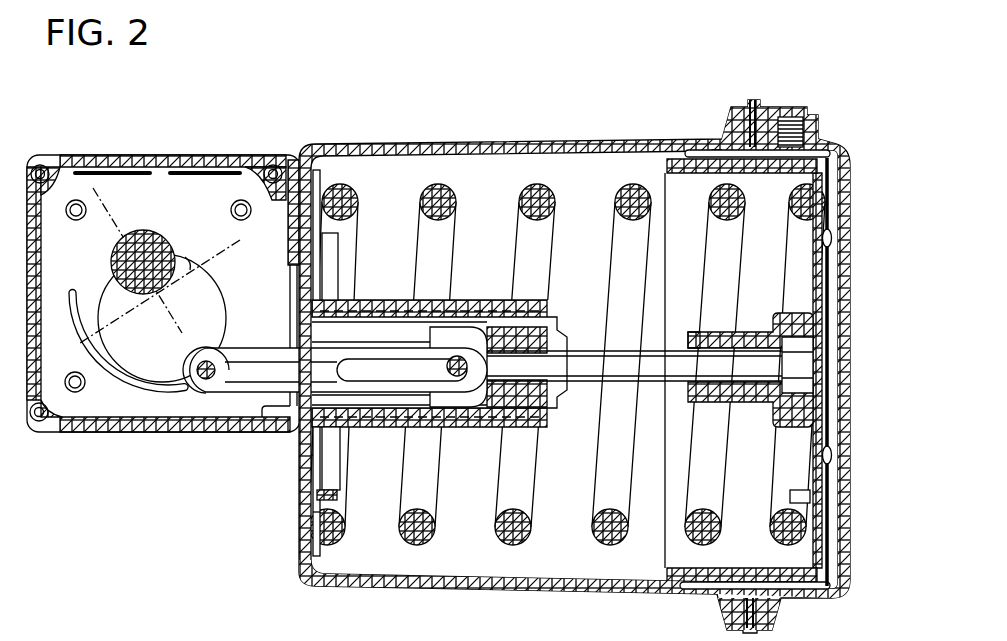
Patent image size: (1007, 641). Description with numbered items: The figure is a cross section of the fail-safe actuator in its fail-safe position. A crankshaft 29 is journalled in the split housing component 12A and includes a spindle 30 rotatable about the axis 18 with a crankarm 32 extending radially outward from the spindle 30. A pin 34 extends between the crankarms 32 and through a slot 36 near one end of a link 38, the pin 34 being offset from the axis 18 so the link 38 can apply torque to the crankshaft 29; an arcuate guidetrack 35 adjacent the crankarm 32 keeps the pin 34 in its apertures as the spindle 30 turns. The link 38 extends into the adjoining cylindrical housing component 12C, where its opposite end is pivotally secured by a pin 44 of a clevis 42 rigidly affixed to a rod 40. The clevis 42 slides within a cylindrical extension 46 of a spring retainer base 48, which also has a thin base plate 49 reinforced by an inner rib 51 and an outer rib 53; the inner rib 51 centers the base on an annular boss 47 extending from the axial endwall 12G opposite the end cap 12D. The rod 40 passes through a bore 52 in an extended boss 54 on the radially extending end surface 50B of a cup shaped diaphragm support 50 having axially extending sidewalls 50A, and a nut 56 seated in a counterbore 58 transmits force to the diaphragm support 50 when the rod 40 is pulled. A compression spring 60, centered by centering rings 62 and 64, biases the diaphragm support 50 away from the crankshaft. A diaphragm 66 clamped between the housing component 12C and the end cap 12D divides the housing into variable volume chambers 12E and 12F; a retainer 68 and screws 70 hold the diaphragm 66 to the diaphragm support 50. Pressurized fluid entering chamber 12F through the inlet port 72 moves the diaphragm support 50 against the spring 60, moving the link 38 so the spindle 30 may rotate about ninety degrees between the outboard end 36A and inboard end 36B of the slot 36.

The split housing component 12A is at (185, 156).
The adjoining housing component 12C is at (408, 145).
The end cap 12D is at (830, 142).
The variable volume chamber 12E is at (570, 575).
The variable volume chamber 12F is at (797, 583).
The axial endwall 12G is at (297, 255).
The axis 18 is at (173, 299).
The crankshaft 29 is at (185, 257).
The spindle 30 is at (125, 257).
The crankarm 32 is at (163, 327).
The pin 34 is at (200, 382).
The arcuate guidetrack 35 is at (132, 383).
The slot 36 is at (243, 385).
The outboard end of slot 36A is at (200, 362).
The inboard end of slot 36B is at (402, 366).
The link 38 is at (437, 387).
The rod 40 is at (585, 363).
The clevis 42 is at (478, 397).
The pin 44 is at (460, 325).
The cylindrical extension 46 is at (355, 422).
The annular boss 47 is at (317, 282).
The spring retainer base 48 is at (325, 300).
The base plate 49 is at (315, 540).
The diaphragm support 50 is at (803, 415).
The axially extending sidewall 50A is at (733, 167).
The radially extending end surface 50B is at (813, 448).
The inner rib 51 is at (297, 460).
The bore 52 is at (715, 332).
The outer rib 53 is at (308, 520).
The extended boss 54 is at (747, 337).
The nut 56 is at (803, 347).
The counterbore 58 is at (773, 417).
The compression spring 60 is at (423, 525).
The centering ring 62 is at (337, 500).
The centering ring 64 is at (800, 500).
The diaphragm 66 is at (700, 150).
The retainer 68 is at (830, 240).
The screw 70 is at (835, 455).
The inlet port 72 is at (797, 105).